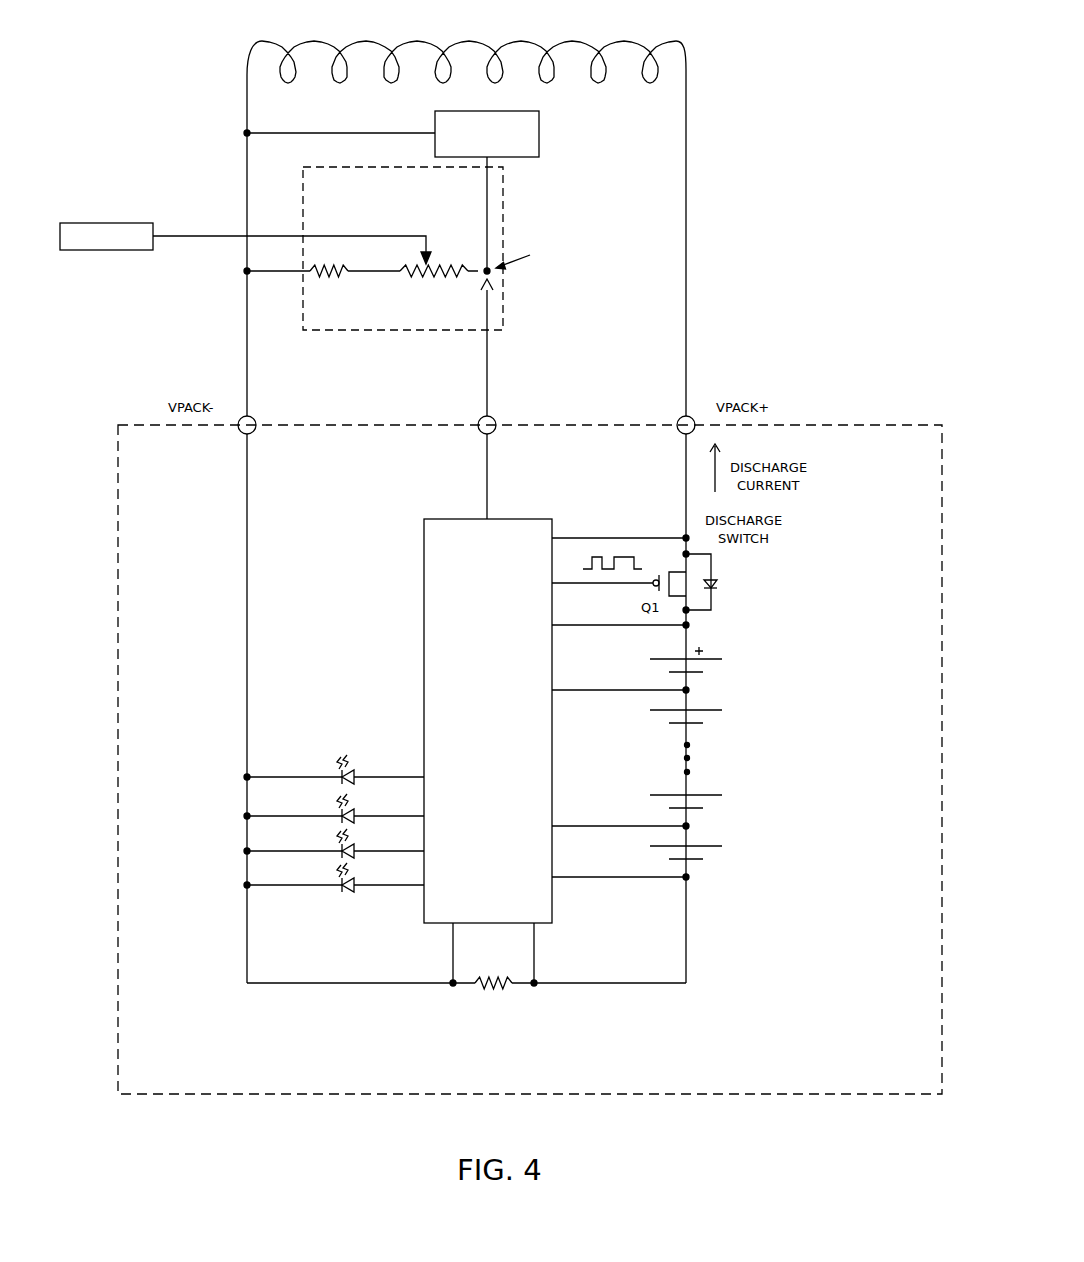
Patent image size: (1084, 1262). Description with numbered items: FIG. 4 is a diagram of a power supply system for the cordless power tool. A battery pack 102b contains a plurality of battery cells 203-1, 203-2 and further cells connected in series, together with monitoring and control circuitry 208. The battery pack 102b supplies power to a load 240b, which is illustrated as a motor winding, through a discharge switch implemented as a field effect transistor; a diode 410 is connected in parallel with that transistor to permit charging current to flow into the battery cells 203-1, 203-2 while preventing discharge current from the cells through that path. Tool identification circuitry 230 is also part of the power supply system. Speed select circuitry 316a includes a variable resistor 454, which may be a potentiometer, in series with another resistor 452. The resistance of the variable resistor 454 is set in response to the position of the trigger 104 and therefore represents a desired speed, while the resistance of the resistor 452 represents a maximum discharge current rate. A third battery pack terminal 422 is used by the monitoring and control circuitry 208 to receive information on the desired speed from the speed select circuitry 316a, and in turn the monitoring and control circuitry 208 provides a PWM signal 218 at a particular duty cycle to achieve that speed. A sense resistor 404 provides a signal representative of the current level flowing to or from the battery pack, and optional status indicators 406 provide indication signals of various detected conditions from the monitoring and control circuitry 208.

The load 240b is at (275, 45).
The tool identification circuitry 230 is at (539, 130).
The trigger 104 is at (75, 223).
The speed select circuitry 316a is at (503, 228).
The resistor 452 is at (315, 278).
The variable resistor 454 is at (405, 278).
The third battery pack terminal 422 is at (478, 420).
The battery pack 102b is at (827, 425).
The monitoring and control circuitry 208 is at (424, 667).
The PWM signal 218 is at (594, 556).
The diode 410 is at (718, 572).
The battery cell 203-1 is at (713, 658).
The battery cell 203-2 is at (700, 710).
The status indicators 406 is at (336, 910).
The sense resistor 404 is at (497, 990).